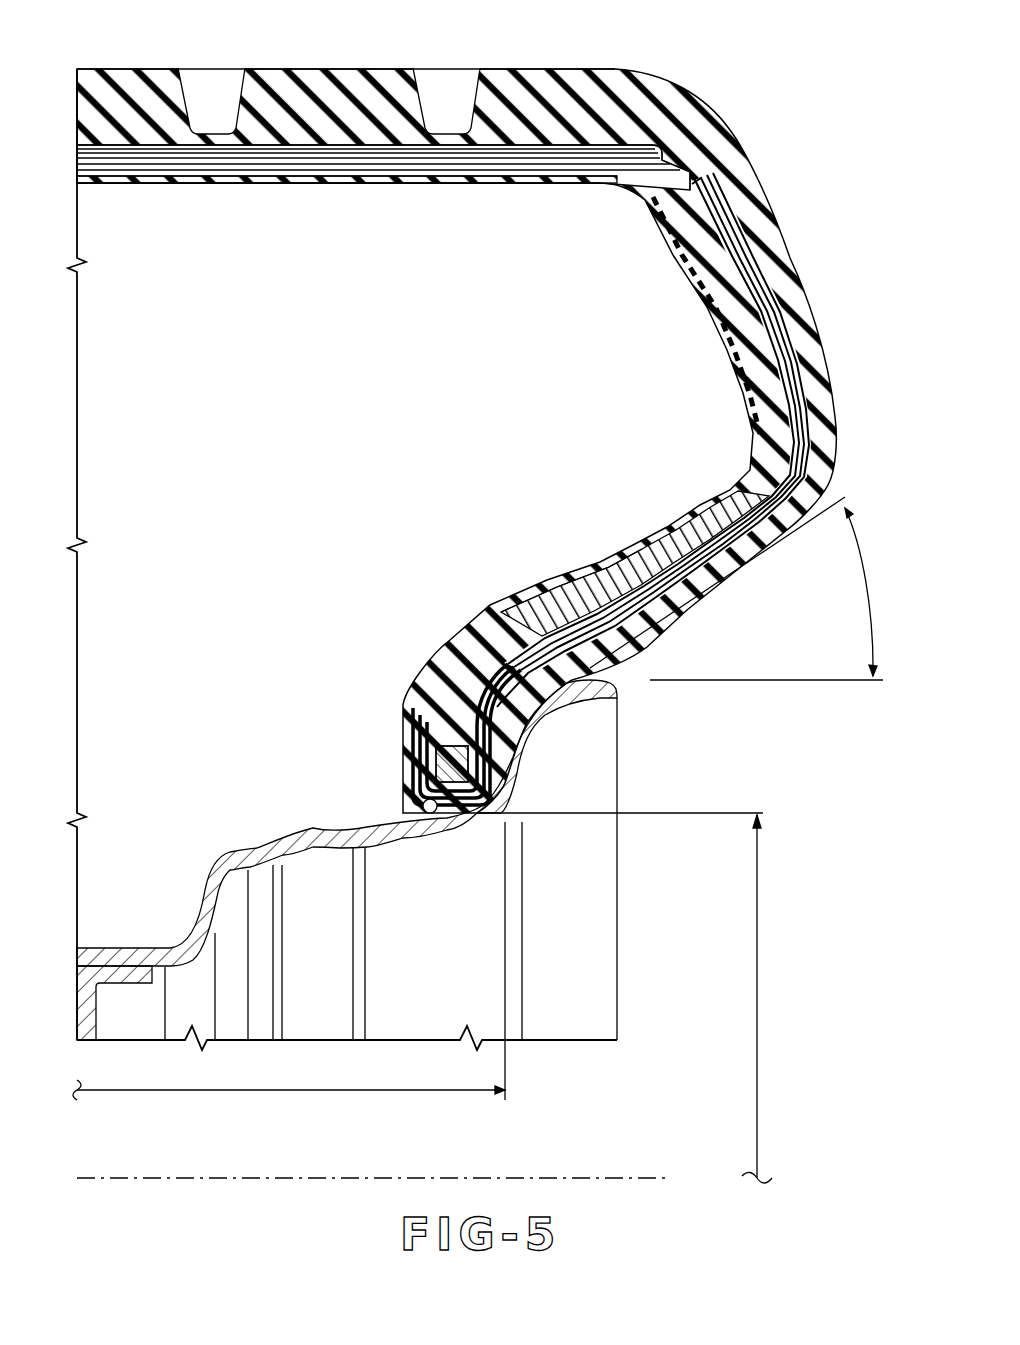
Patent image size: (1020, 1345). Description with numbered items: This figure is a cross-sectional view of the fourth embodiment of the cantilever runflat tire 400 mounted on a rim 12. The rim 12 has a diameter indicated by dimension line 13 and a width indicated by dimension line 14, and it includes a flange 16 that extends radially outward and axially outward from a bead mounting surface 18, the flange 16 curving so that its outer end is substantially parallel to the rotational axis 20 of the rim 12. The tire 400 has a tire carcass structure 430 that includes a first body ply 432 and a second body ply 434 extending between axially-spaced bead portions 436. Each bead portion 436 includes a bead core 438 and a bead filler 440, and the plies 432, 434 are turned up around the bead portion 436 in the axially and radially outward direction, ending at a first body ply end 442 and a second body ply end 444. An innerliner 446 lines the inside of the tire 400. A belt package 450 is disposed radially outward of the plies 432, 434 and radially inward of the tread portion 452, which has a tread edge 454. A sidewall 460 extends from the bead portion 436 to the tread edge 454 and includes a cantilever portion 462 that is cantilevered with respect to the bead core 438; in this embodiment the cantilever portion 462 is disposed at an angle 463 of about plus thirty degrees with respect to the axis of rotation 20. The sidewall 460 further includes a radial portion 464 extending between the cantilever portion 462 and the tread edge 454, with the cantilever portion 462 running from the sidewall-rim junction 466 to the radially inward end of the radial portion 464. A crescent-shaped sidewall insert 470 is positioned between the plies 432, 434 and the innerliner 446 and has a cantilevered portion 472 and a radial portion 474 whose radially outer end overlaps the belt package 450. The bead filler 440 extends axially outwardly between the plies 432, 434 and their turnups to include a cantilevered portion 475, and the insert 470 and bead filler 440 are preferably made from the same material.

The cantilever runflat tire 400 is at (735, 95).
The tread portion 452 is at (342, 62).
The belt package 450 is at (383, 135).
The tread edge 454 is at (700, 100).
The tire carcass structure 430 is at (212, 182).
The first body ply 432 is at (273, 160).
The second body ply 434 is at (358, 152).
The innerliner 446 is at (440, 180).
The radial portion of sidewall insert 474 is at (706, 266).
The first body ply end 442 is at (800, 345).
The radial portion of sidewall 464 is at (710, 338).
The second body ply end 444 is at (812, 398).
The sidewall 460 is at (728, 402).
The sidewall insert 470 is at (740, 480).
The cantilever portion 462 is at (614, 547).
The cantilevered portion of sidewall insert 472 is at (565, 575).
The angle 463 is at (868, 612).
The cantilevered portion of bead filler 475 is at (630, 595).
The bead filler 440 is at (390, 777).
The sidewall-rim junction 466 is at (605, 672).
The bead portion 436 is at (435, 725).
The bead core 438 is at (432, 763).
The flange 16 is at (598, 697).
The bead mounting surface 18 is at (428, 816).
The rim 12 is at (420, 890).
The dimension line for rim diameter 13 is at (754, 913).
The dimension line for rim width 14 is at (272, 1090).
The rotational axis 20 is at (622, 1177).